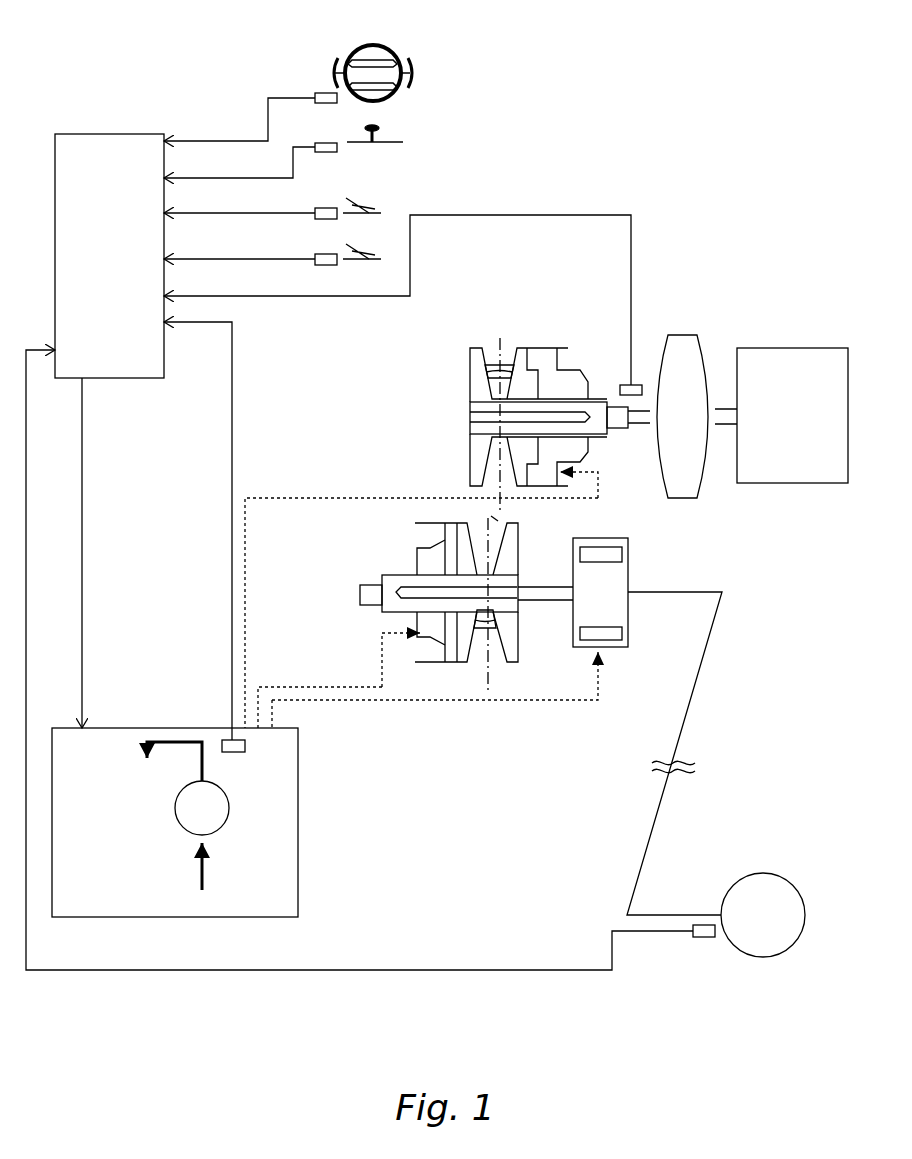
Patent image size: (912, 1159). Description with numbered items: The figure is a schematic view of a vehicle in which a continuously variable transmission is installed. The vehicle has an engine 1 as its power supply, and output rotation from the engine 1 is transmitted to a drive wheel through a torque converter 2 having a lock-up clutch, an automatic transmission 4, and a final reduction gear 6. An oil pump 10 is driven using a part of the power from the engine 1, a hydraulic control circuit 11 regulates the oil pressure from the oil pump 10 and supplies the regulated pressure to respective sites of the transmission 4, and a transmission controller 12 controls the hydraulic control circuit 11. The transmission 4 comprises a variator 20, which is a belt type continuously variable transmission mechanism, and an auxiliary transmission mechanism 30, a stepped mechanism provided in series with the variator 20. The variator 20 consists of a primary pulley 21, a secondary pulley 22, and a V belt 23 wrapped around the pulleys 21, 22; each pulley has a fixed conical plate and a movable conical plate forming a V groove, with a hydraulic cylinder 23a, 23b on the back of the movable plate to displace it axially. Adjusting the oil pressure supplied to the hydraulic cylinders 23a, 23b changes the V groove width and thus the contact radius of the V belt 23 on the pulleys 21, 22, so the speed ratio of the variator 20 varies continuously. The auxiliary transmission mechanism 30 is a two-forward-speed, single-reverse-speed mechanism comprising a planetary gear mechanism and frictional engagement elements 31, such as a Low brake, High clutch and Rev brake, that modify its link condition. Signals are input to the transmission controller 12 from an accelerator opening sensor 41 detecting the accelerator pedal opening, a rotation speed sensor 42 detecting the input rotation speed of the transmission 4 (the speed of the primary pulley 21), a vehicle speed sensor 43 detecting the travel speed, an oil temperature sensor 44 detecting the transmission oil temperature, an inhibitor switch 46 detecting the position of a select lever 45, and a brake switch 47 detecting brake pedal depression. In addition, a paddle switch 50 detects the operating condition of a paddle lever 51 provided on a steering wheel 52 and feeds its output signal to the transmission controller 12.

The engine 1 is at (803, 348).
The torque converter 2 is at (680, 335).
The transmission 4 is at (601, 302).
The final reduction gear 6 is at (762, 873).
The oil pump 10 is at (230, 806).
The hydraulic control circuit 11 is at (100, 728).
The transmission controller 12 is at (150, 134).
The variator 20 is at (432, 482).
The primary pulley 21 is at (520, 348).
The secondary pulley 22 is at (382, 575).
The V belt 23 is at (488, 365).
The hydraulic cylinder 23a is at (582, 383).
The hydraulic cylinder 23b is at (426, 560).
The auxiliary transmission mechanism 30 is at (630, 563).
The frictional engagement elements 31 is at (612, 654).
The accelerator opening sensor 41 is at (337, 218).
The rotation speed sensor 42 is at (641, 383).
The vehicle speed sensor 43 is at (706, 937).
The oil temperature sensor 44 is at (228, 740).
The select lever 45 is at (380, 142).
The inhibitor switch 46 is at (329, 152).
The brake switch 47 is at (336, 265).
The paddle switch 50 is at (320, 93).
The paddle lever 51 is at (411, 70).
The steering wheel 52 is at (396, 45).